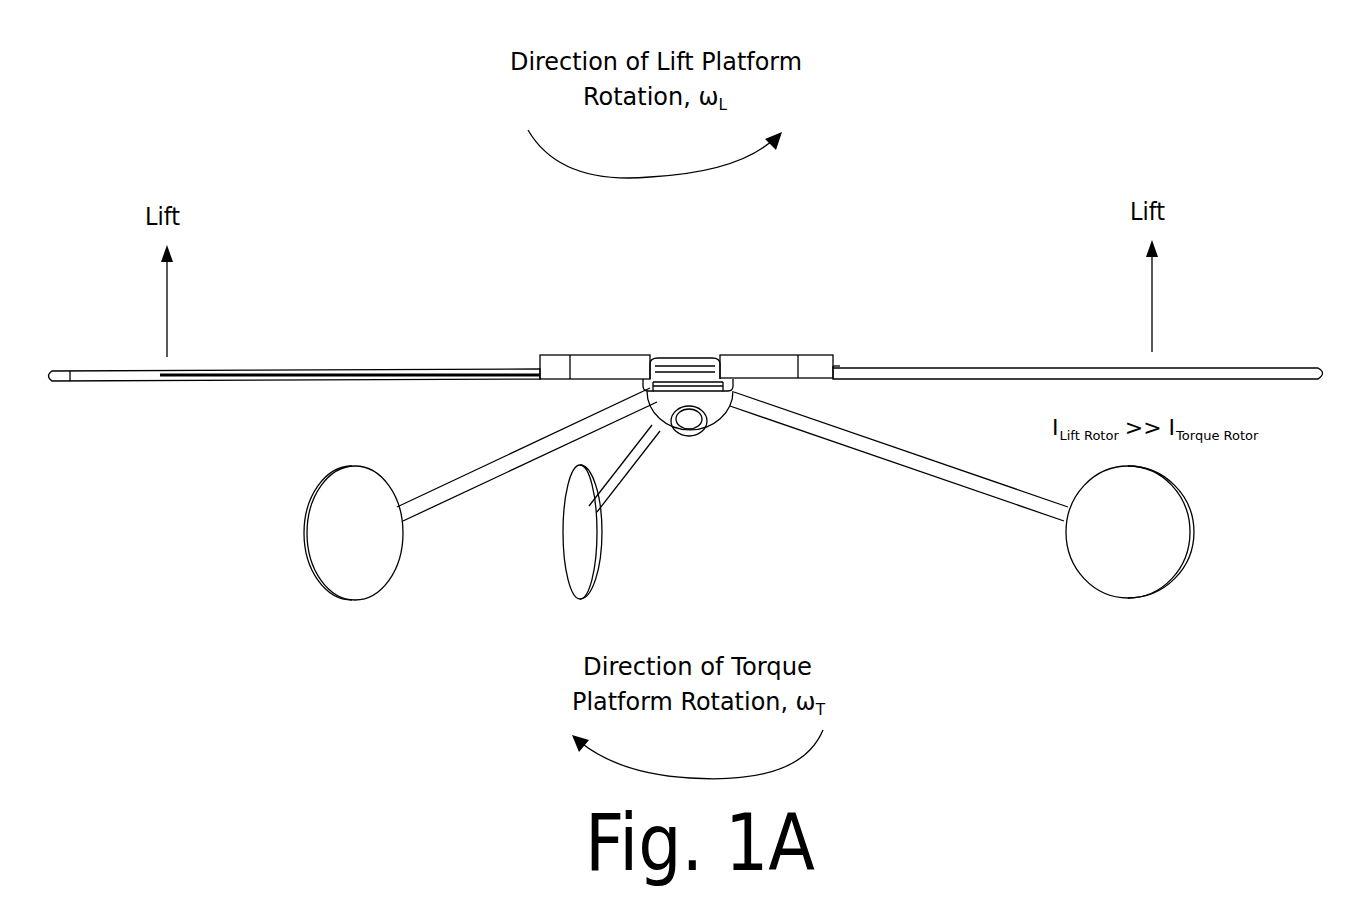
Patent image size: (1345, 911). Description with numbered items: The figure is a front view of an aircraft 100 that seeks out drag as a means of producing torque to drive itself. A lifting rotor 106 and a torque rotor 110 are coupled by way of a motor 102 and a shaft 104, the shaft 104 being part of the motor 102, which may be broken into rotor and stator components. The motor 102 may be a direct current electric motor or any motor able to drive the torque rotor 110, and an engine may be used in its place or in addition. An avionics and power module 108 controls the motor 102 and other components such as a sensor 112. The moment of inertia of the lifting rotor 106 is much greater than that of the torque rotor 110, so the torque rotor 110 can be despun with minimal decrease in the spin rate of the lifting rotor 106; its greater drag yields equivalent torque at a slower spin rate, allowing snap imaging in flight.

The aircraft 100 is at (1022, 148).
The motor 102 is at (695, 372).
The shaft 104 is at (729, 404).
The lifting rotor 106 is at (402, 352).
The avionics and power module 108 is at (562, 349).
The torque rotor 110 is at (296, 572).
The sensor 112 is at (688, 472).